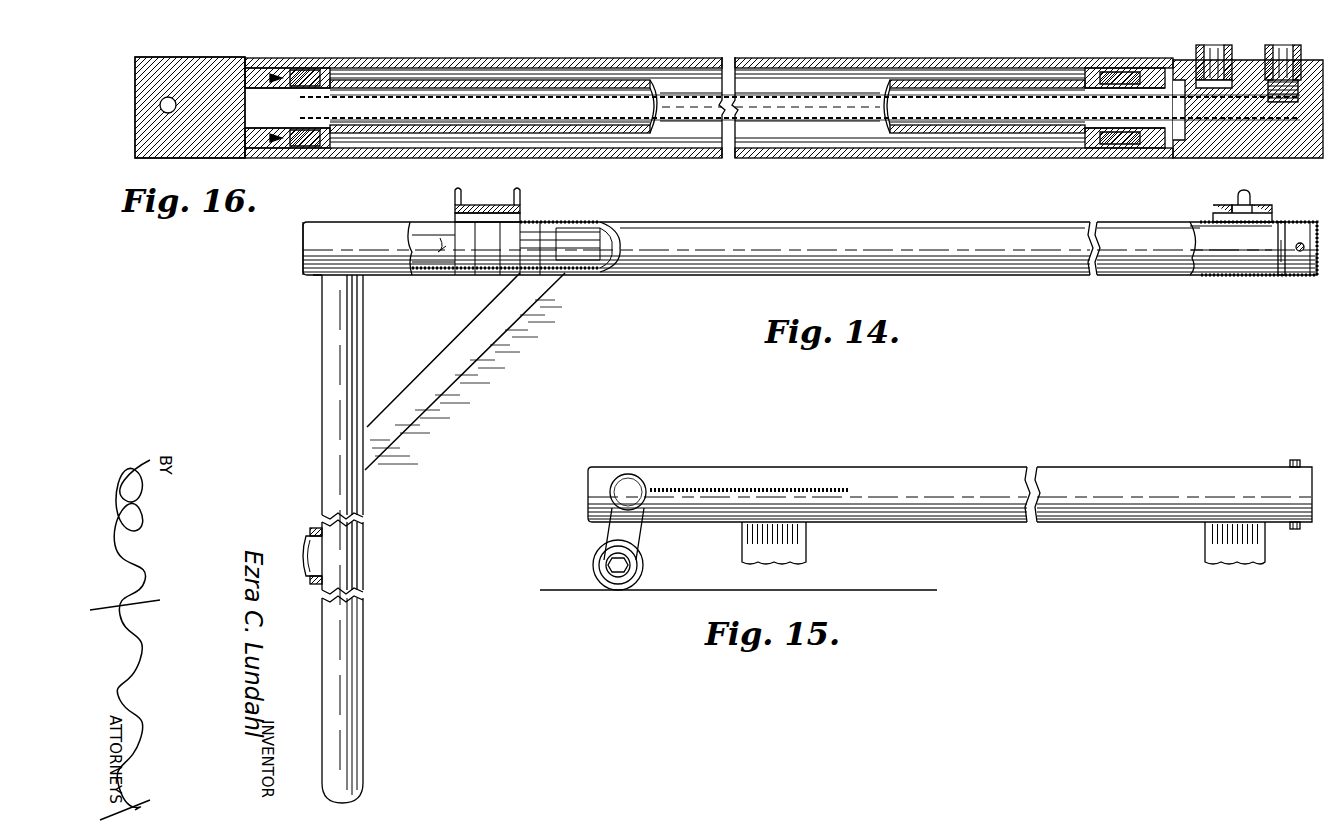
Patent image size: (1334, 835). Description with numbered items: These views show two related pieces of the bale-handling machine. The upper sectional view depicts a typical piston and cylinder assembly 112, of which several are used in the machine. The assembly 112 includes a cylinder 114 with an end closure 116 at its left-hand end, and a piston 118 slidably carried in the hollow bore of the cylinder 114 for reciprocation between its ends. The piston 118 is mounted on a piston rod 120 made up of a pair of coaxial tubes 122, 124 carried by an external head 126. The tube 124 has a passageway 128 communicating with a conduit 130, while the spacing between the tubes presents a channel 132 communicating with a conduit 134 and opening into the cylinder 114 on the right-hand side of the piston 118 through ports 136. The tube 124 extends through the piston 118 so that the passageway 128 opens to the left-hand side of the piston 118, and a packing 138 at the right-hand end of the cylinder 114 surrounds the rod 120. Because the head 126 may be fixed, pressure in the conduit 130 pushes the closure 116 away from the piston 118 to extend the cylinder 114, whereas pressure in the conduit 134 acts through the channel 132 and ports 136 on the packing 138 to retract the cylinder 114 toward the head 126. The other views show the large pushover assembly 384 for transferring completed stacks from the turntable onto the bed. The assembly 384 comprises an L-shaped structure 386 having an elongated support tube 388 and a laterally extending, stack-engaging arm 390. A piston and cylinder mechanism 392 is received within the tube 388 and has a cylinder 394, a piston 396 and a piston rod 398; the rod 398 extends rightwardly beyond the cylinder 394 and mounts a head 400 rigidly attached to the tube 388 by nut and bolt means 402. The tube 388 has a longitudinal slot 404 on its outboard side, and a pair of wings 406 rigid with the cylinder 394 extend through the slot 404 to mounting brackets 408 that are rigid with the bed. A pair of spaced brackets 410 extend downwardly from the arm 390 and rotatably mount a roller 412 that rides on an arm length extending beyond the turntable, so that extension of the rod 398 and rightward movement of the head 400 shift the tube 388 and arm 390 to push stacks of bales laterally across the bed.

In FIG. 16, the piston and cylinder assembly 112 is at (402, 57).
In FIG. 16, the cylinder 114 is at (530, 60).
In FIG. 16, the end closure 116 is at (172, 60).
In FIG. 16, the piston 118 is at (300, 68).
In FIG. 16, the piston rod 120 is at (810, 80).
In FIG. 16, the coaxial tube 122 is at (618, 86).
In FIG. 16, the coaxial tube 124 is at (625, 110).
In FIG. 16, the external head 126 is at (1248, 122).
In FIG. 16, the passageway 128 is at (455, 100).
In FIG. 16, the conduit 130 is at (1265, 46).
In FIG. 16, the channel 132 is at (915, 85).
In FIG. 16, the conduit 134 is at (1196, 48).
In FIG. 16, the ports 136 is at (340, 60).
In FIG. 16, the packing 138 is at (1100, 148).
In FIG. 14, the large pushover assembly 384 is at (683, 278).
In FIG. 15, the large pushover assembly 384 is at (673, 464).
In FIG. 14, the L-shaped structure 386 is at (322, 336).
In FIG. 14, the support tube 388 is at (990, 262).
In FIG. 15, the support tube 388 is at (970, 478).
In FIG. 14, the stack-engaging arm 390 is at (362, 462).
In FIG. 15, the stack-engaging arm 390 is at (630, 485).
In FIG. 14, the piston and cylinder mechanism 392 is at (558, 226).
In FIG. 14, the cylinder 394 is at (1210, 270).
In FIG. 14, the piston 396 is at (548, 282).
In FIG. 14, the piston rod 398 is at (565, 276).
In FIG. 14, the head 400 is at (1298, 262).
In FIG. 14, the nut and bolt means 402 is at (1290, 265).
In FIG. 15, the nut and bolt means 402 is at (1295, 464).
In FIG. 14, the slot 404 is at (440, 225).
In FIG. 14, the wings 406 is at (470, 272).
In FIG. 14, the mounting brackets 408 is at (520, 200).
In FIG. 14, the brackets 410 is at (312, 528).
In FIG. 15, the brackets 410 is at (615, 535).
In FIG. 14, the roller 412 is at (306, 552).
In FIG. 15, the roller 412 is at (640, 566).